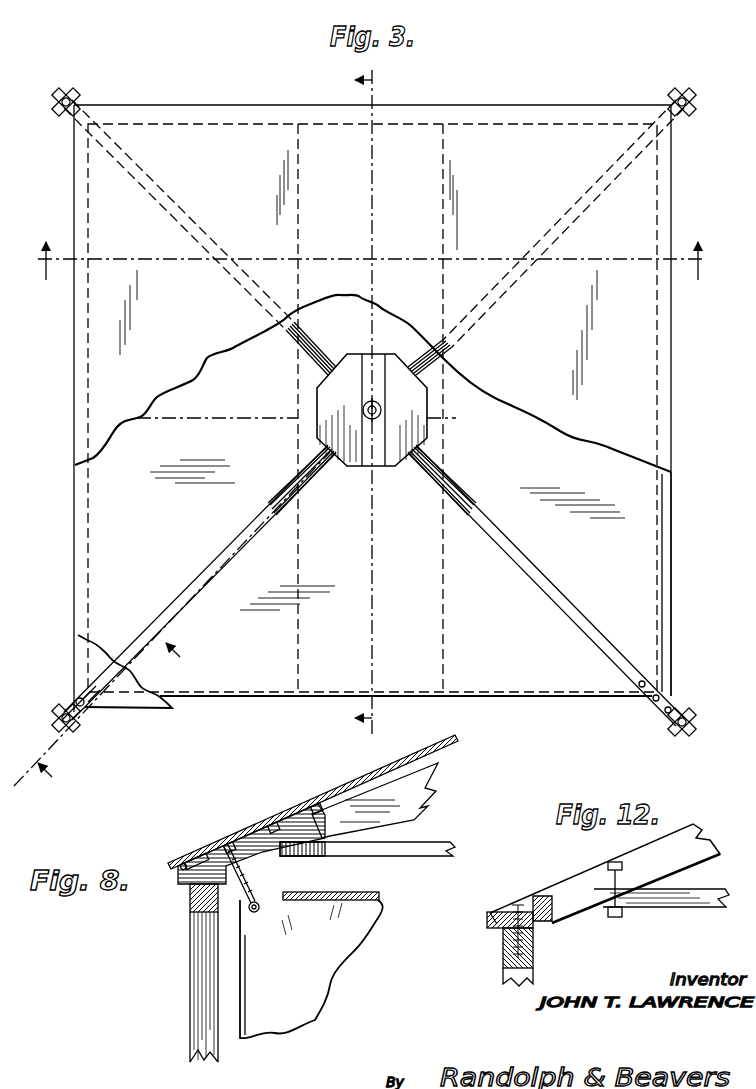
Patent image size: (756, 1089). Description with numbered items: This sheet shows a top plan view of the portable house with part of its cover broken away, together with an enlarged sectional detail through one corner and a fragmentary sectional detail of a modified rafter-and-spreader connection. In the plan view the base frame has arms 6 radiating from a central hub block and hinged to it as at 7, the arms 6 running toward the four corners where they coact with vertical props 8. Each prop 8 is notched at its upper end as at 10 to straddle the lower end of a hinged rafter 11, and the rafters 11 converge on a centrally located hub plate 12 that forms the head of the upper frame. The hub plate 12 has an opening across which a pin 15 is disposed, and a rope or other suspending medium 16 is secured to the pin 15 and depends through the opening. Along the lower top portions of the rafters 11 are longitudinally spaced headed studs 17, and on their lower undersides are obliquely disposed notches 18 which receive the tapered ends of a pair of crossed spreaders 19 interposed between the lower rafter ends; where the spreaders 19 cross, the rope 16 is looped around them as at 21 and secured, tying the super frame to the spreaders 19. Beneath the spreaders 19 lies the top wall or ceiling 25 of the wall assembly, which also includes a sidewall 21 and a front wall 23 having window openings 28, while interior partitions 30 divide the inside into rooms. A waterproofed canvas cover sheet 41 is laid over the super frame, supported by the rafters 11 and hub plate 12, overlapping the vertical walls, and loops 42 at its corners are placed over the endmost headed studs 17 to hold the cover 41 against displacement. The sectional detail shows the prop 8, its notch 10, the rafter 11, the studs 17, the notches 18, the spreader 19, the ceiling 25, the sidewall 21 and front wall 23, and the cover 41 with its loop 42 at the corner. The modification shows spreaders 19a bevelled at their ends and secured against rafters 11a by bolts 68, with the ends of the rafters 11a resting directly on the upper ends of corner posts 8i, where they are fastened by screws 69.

In FIG. 3, the arms 6 is at (375, 402).
In FIG. 3, the hinge 7 is at (369, 271).
In FIG. 3, the vertical props 8 is at (78, 727).
In FIG. 8, the vertical props 8 is at (196, 948).
In FIG. 12, the corner posts 8i is at (503, 974).
In FIG. 8, the notch 10 is at (188, 885).
In FIG. 3, the rafters 11 is at (287, 334).
In FIG. 12, the rafters 11a is at (698, 828).
In FIG. 3, the hub plate 12 is at (428, 443).
In FIG. 3, the pin 15 is at (381, 413).
In FIG. 3, the rope or suspending medium 16 is at (366, 421).
In FIG. 3, the headed studs 17 is at (60, 720).
In FIG. 8, the headed studs 17 is at (257, 818).
In FIG. 8, the notches 18 is at (395, 819).
In FIG. 8, the spreaders 19 is at (412, 830).
In FIG. 12, the spreaders 19a is at (700, 888).
In FIG. 3, the sidewall 21 is at (88, 570).
In FIG. 8, the sidewall 21 is at (345, 932).
In FIG. 3, the front wall 23 is at (247, 698).
In FIG. 8, the front wall 23 is at (250, 998).
In FIG. 3, the top wall or ceiling 25 is at (595, 680).
In FIG. 8, the top wall or ceiling 25 is at (322, 892).
In FIG. 3, the window openings 28 is at (672, 603).
In FIG. 3, the partitions 30 is at (300, 640).
In FIG. 3, the cover sheet 41 is at (638, 233).
In FIG. 8, the cover sheet 41 is at (378, 752).
In FIG. 3, the loops 42 is at (80, 700).
In FIG. 8, the loops 42 is at (278, 880).
In FIG. 12, the bolts 68 is at (618, 920).
In FIG. 12, the screws 69 is at (522, 905).